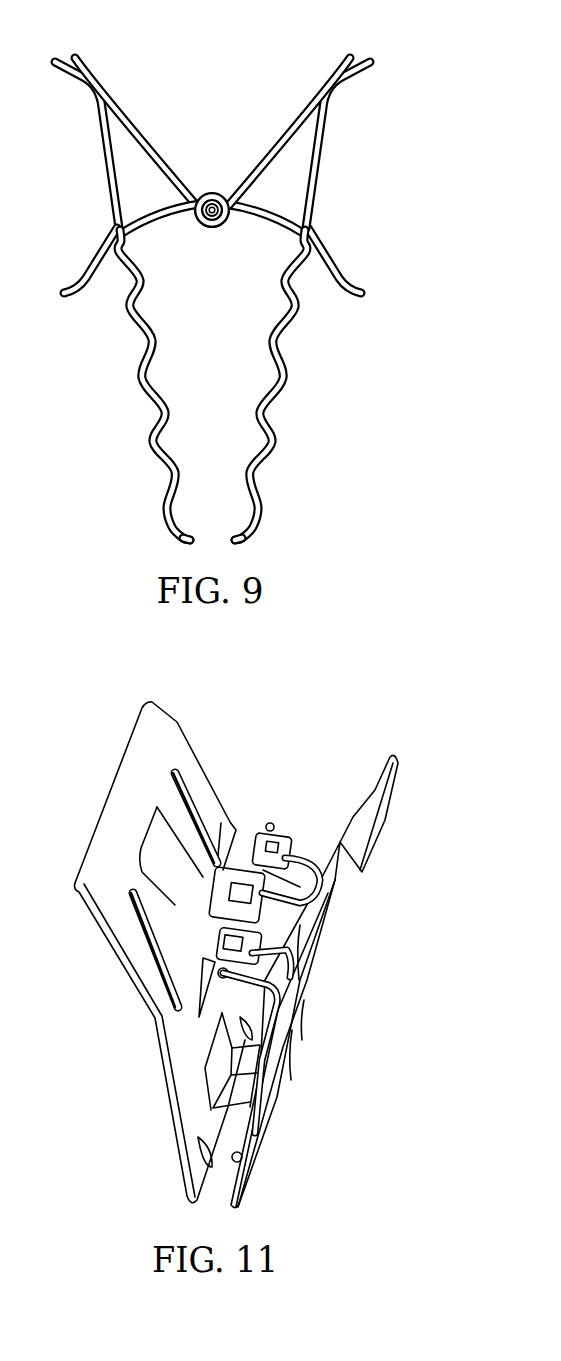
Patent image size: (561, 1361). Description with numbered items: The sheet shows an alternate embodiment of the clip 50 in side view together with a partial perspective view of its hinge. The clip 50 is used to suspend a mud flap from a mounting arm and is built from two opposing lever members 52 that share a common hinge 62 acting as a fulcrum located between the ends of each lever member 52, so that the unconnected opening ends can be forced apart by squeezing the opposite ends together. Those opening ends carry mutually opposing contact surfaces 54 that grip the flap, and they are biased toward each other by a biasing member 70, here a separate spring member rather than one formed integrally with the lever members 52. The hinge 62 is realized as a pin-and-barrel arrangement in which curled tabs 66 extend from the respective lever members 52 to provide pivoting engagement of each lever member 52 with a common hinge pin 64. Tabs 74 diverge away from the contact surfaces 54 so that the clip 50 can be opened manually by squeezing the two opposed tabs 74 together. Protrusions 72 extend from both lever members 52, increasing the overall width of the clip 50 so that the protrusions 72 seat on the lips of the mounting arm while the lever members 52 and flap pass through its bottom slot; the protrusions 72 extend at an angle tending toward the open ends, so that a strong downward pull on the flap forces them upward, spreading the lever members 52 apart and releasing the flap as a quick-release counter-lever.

In FIG. 9, the clip 50 is at (156, 86).
In FIG. 9, the lever member 52 is at (157, 521).
In FIG. 11, the lever member 52 is at (170, 1120).
In FIG. 9, the contact surface 54 is at (245, 409).
In FIG. 9, the hinge 62 is at (213, 198).
In FIG. 11, the hinge 62 is at (272, 859).
In FIG. 9, the hinge pin 64 is at (212, 210).
In FIG. 11, the hinge pin 64 is at (268, 824).
In FIG. 11, the curled tab 66 is at (207, 913).
In FIG. 9, the biasing member 70 is at (290, 128).
In FIG. 9, the protrusion 72 is at (98, 257).
In FIG. 9, the tab 74 is at (320, 165).
In FIG. 11, the tab 74 is at (127, 795).